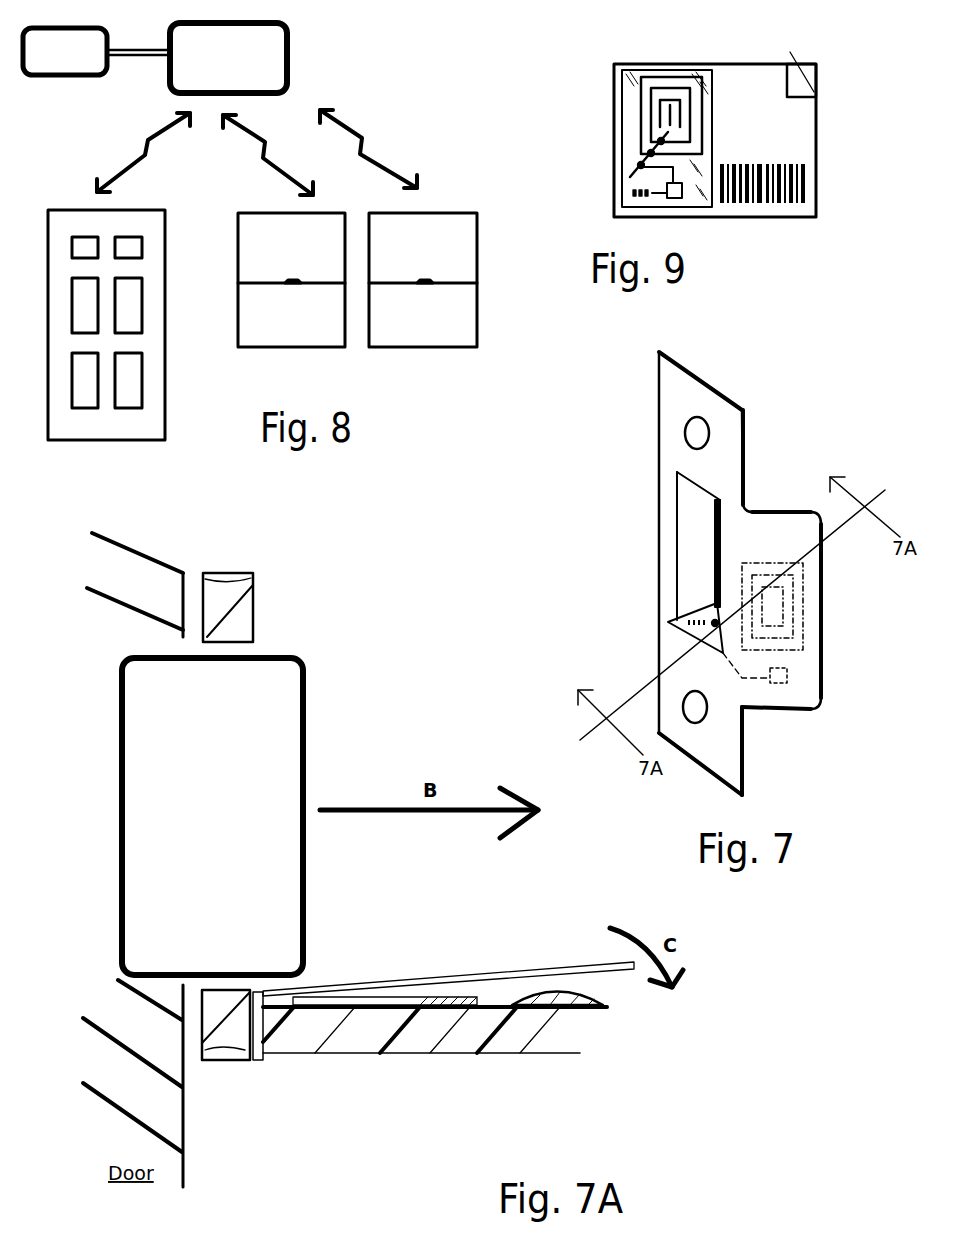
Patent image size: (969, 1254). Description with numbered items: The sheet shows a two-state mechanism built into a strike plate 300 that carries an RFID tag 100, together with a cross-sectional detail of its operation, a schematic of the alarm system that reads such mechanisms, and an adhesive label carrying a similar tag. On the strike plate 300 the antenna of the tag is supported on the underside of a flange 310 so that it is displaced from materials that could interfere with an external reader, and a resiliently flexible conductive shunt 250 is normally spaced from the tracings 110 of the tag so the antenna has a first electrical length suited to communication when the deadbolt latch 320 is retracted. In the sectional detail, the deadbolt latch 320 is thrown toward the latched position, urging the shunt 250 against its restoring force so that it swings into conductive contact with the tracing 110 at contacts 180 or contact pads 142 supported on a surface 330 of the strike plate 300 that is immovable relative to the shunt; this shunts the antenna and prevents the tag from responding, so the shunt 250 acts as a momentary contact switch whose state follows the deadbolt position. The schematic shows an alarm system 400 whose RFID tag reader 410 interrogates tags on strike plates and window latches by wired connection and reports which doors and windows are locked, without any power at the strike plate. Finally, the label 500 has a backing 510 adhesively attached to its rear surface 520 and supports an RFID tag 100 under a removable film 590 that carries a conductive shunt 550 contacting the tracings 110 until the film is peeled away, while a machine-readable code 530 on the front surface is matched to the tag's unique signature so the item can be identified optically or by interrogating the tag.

In FIG. 9, the RFID tag 100 is at (636, 127).
In FIG. 7, the RFID tag 100 is at (783, 638).
In FIG. 7A, the tracings 110 is at (468, 1005).
In FIG. 7A, the contact pads 142 is at (366, 1008).
In FIG. 7A, the contacts 180 is at (555, 993).
In FIG. 7, the conductive shunt 250 is at (703, 628).
In FIG. 7A, the conductive shunt 250 is at (480, 978).
In FIG. 7, the strike plate 300 is at (646, 442).
In FIG. 7A, the strike plate 300 is at (250, 598).
In FIG. 7, the flange 310 is at (770, 698).
In FIG. 7A, the deadbolt latch 320 is at (212, 816).
In FIG. 7A, the surface 330 is at (297, 1040).
In FIG. 8, the alarm system 400 is at (35, 63).
In FIG. 8, the RFID tag reader 410 is at (268, 72).
In FIG. 9, the label 500 is at (715, 140).
In FIG. 9, the backing 510 is at (813, 64).
In FIG. 9, the rear surface 520 is at (787, 88).
In FIG. 9, the machine-readable code 530 is at (747, 208).
In FIG. 9, the conductive shunt 550 is at (630, 180).
In FIG. 9, the removable film 590 is at (667, 66).